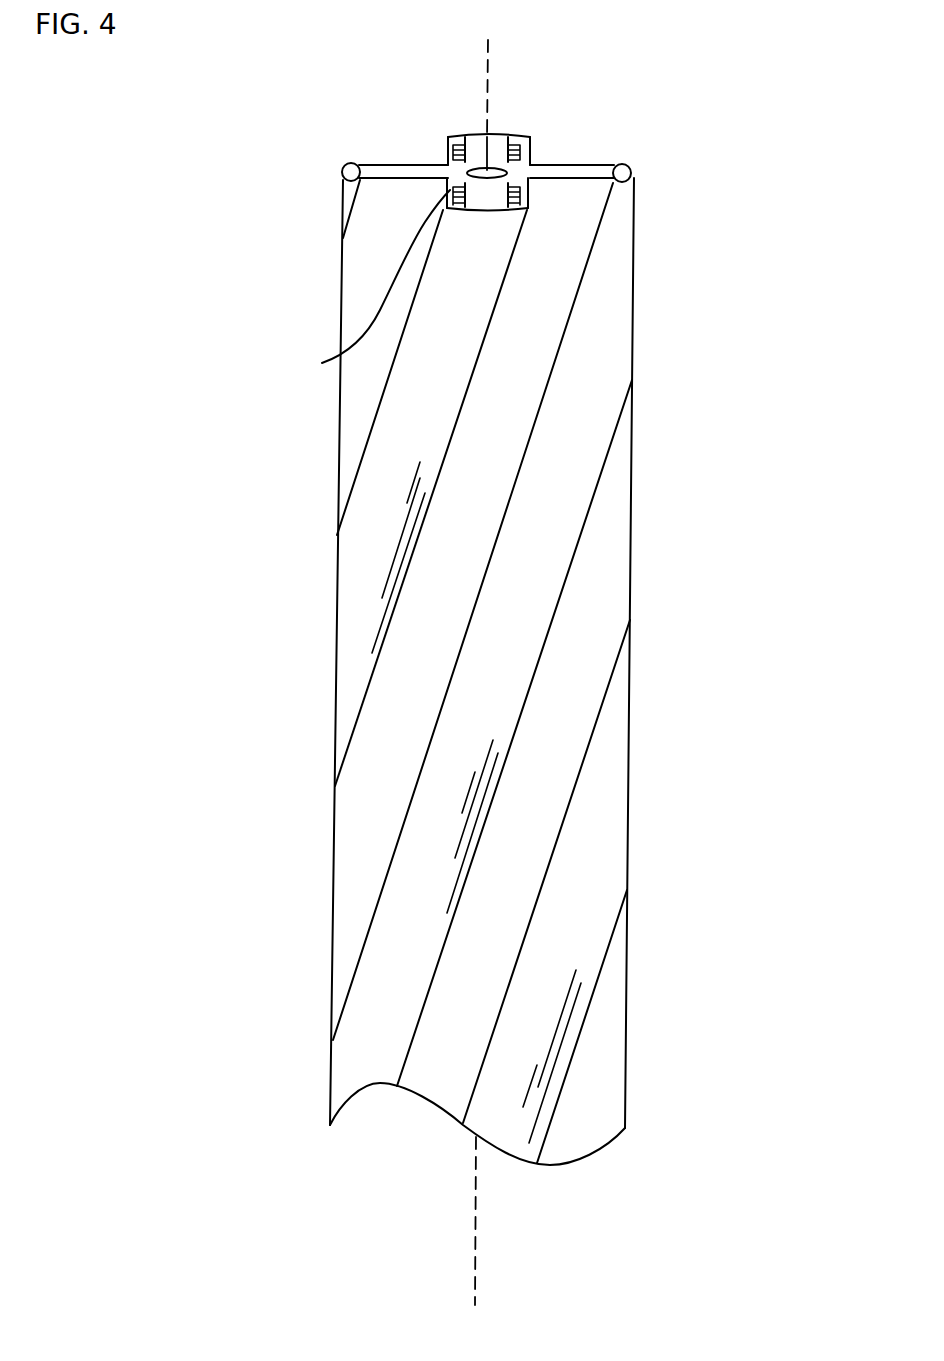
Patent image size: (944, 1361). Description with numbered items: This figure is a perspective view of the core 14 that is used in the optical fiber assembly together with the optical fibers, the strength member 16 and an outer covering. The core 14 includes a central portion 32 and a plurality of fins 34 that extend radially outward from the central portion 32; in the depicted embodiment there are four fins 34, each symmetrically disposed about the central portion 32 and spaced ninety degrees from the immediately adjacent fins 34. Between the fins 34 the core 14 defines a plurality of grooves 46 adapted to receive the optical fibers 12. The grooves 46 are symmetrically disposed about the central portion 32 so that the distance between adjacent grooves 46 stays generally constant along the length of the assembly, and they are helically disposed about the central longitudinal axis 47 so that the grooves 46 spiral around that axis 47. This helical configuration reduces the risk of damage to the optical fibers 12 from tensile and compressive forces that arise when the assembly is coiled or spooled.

The optical fiber 12 is at (361, 287).
The core 14 is at (310, 307).
The strength member 16 is at (453, 160).
The central portion 32 is at (515, 172).
The fins 34 is at (589, 163).
The grooves 46 is at (547, 330).
The central longitudinal axis 47 is at (490, 60).